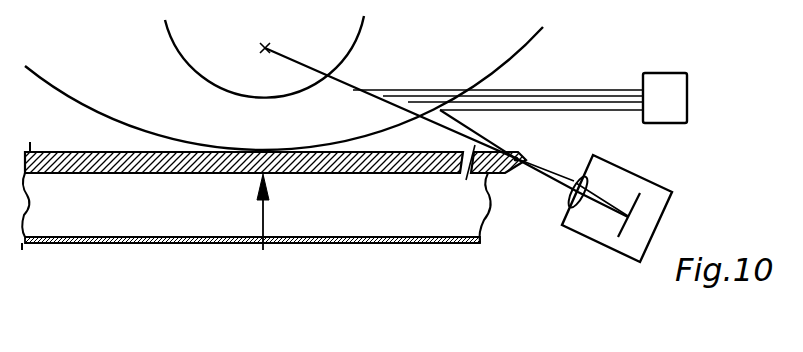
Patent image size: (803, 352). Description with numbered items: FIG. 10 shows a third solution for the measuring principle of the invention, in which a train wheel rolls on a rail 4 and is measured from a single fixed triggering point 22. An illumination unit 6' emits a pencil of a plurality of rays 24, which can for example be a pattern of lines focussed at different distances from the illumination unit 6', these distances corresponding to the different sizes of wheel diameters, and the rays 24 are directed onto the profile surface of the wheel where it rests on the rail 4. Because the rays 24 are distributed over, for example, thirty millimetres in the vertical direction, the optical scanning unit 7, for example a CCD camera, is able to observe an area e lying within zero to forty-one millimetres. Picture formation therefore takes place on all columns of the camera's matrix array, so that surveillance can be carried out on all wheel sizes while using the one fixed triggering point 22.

The rail 4 is at (80, 207).
The fixed triggering point 22 is at (264, 230).
The rays 24 is at (552, 88).
The illumination unit 6' is at (669, 75).
The optical scanning unit 7 is at (663, 173).
The area e is at (491, 111).